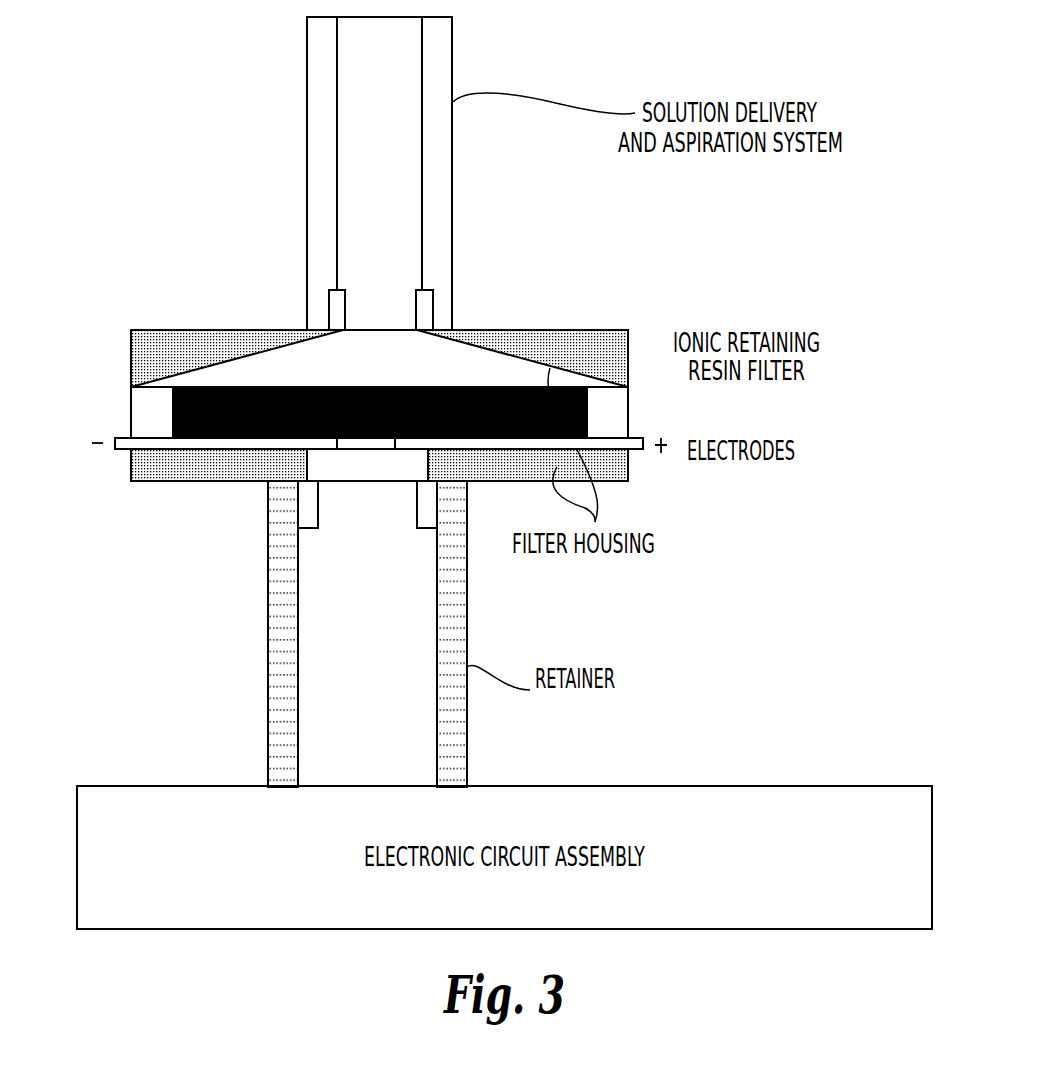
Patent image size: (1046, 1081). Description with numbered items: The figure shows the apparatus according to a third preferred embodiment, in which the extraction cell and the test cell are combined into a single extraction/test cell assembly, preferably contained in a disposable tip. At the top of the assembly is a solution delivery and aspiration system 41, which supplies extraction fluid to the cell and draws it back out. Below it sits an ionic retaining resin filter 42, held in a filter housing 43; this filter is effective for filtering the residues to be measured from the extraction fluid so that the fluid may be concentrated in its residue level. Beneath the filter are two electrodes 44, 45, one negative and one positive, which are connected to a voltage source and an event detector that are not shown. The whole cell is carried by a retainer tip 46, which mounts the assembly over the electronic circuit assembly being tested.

The solution delivery and aspiration system 41 is at (353, 155).
The ionic retaining resin filter 42 is at (186, 416).
The filter housing 43 is at (197, 345).
The electrode 44 is at (122, 452).
The electrode 45 is at (633, 449).
The retainer tip 46 is at (283, 678).